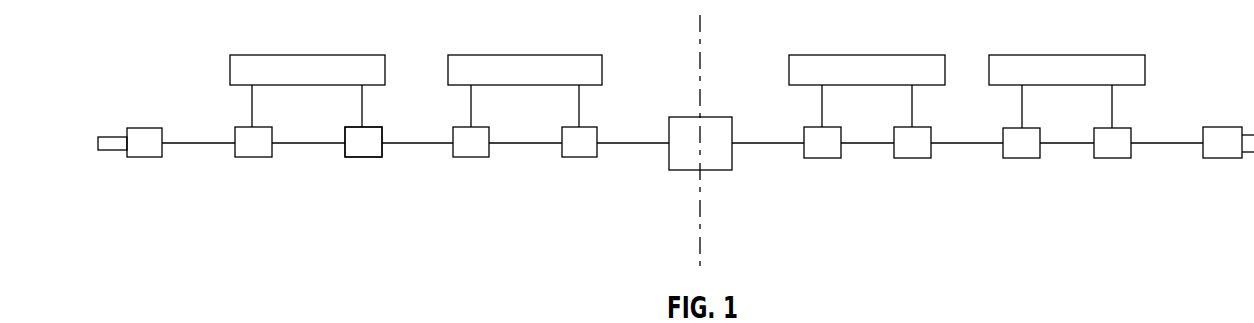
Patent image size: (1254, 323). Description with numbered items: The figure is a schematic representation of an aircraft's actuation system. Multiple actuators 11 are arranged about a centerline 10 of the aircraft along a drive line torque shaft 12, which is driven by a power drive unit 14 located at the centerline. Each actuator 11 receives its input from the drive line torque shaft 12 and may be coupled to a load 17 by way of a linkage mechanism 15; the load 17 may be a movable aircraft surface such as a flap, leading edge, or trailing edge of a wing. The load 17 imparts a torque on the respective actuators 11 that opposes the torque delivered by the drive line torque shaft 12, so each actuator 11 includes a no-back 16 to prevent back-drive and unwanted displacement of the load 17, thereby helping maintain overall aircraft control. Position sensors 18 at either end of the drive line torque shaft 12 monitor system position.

The centerline 10 is at (701, 210).
The actuators 11 is at (357, 147).
The drive line torque shaft 12 is at (630, 145).
The power drive unit 14 is at (733, 157).
The linkage mechanism 15 is at (912, 103).
The no-backs 16 is at (368, 157).
The load 17 is at (1145, 70).
The position sensors 18 is at (145, 159).